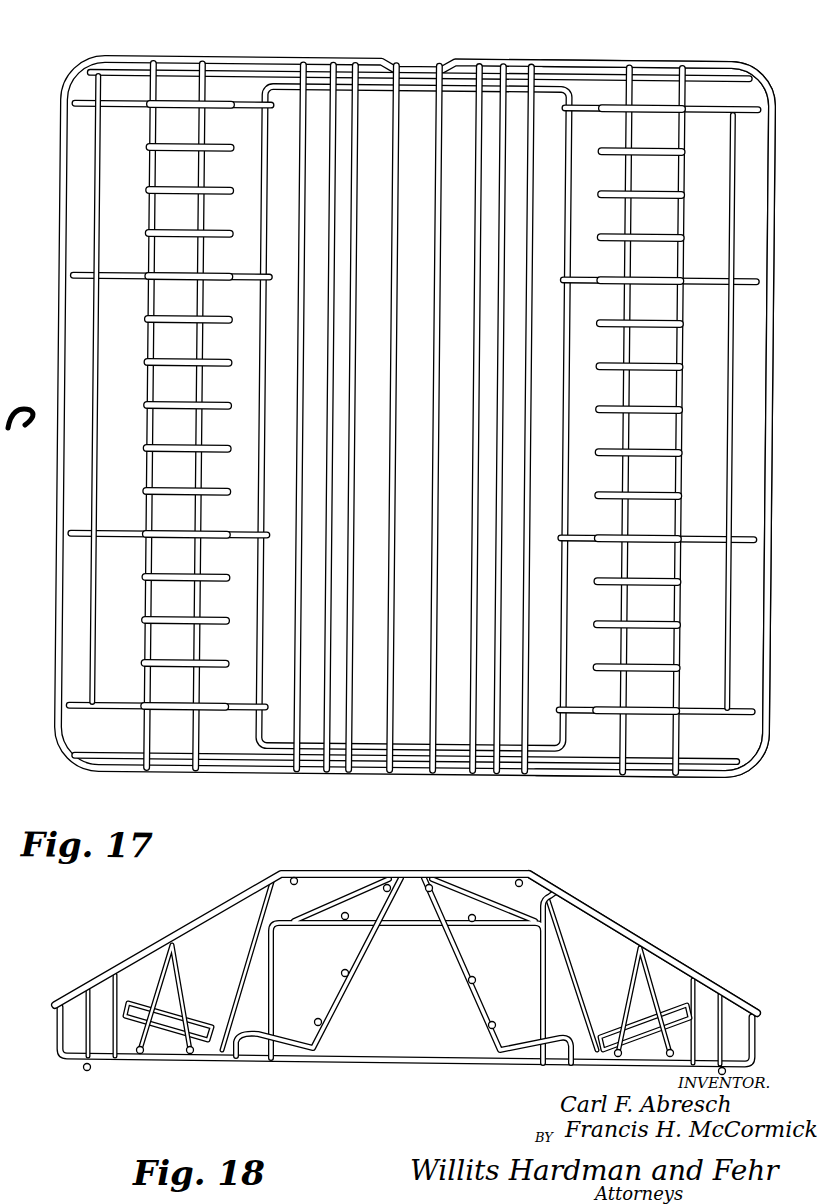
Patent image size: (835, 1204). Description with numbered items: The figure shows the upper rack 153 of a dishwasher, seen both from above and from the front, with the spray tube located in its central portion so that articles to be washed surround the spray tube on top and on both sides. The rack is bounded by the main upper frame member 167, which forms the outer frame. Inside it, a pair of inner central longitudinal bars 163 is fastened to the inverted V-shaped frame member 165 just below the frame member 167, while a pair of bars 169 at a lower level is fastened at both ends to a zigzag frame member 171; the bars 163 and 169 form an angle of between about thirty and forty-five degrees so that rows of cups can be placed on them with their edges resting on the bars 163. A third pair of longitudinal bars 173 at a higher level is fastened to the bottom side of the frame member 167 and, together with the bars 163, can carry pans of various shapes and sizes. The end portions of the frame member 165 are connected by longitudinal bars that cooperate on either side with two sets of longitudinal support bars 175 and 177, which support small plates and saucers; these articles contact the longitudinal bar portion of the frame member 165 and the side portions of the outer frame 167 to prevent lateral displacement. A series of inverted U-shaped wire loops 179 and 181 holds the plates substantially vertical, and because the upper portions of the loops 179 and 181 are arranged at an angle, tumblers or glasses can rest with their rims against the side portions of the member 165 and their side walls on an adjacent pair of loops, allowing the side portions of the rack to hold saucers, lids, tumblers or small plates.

In FIG. 17, the rack 153 is at (381, 58).
In FIG. 18, the rack 153 is at (472, 871).
In FIG. 17, the pair of inner central longitudinal bars 163 is at (428, 793).
In FIG. 18, the pair of inner central longitudinal bars 163 is at (430, 884).
In FIG. 17, the inverted V-shaped frame member 165 is at (565, 735).
In FIG. 18, the inverted V-shaped frame member 165 is at (475, 998).
In FIG. 17, the main upper frame member 167 is at (649, 66).
In FIG. 18, the main upper frame member 167 is at (631, 941).
In FIG. 17, the pair of bars at the lower level 169 is at (352, 770).
In FIG. 18, the pair of bars at the lower level 169 is at (345, 920).
In FIG. 17, the zigzag frame member 171 is at (240, 77).
In FIG. 18, the zigzag frame member 171 is at (275, 1058).
In FIG. 17, the third pair of longitudinal bars 173 is at (298, 772).
In FIG. 18, the third pair of longitudinal bars 173 is at (292, 878).
In FIG. 17, the longitudinal support bars 175 is at (186, 795).
In FIG. 18, the longitudinal support bars 175 is at (140, 1054).
In FIG. 17, the longitudinal support bars 177 is at (626, 772).
In FIG. 18, the longitudinal support bars 177 is at (618, 1057).
In FIG. 17, the inverted U-shaped wire loops 179 is at (147, 192).
In FIG. 18, the inverted U-shaped wire loops 179 is at (200, 1015).
In FIG. 17, the inverted U-shaped wire loops 181 is at (706, 186).
In FIG. 18, the inverted U-shaped wire loops 181 is at (602, 1022).